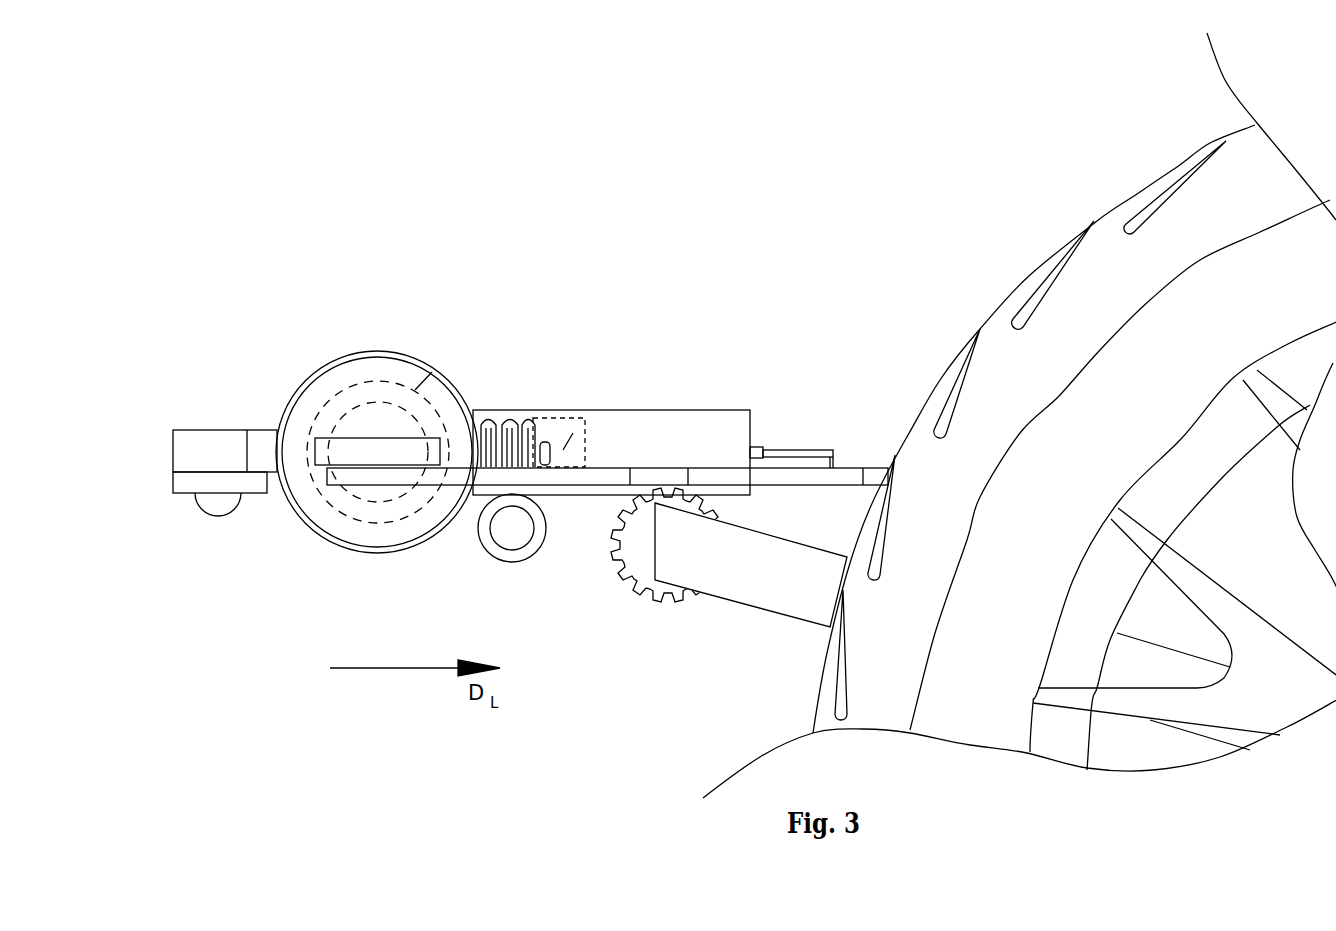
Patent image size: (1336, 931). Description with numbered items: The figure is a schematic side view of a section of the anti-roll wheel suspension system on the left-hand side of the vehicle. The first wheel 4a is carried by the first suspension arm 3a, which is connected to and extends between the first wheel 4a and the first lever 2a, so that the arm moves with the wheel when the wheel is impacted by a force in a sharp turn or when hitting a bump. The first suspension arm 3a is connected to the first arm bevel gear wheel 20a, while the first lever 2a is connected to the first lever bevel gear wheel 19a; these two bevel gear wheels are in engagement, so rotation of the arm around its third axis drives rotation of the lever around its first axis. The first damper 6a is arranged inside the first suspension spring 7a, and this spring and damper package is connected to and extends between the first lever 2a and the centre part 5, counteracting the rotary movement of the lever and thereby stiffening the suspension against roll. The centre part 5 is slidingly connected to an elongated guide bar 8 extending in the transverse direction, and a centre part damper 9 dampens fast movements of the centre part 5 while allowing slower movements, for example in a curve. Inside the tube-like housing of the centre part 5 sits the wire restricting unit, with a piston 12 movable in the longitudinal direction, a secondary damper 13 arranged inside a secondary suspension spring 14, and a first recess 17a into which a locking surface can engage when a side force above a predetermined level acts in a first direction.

The first lever 2a is at (798, 478).
The first suspension arm 3a is at (767, 570).
The first wheel 4a is at (882, 648).
The centre part 5 is at (672, 352).
The first damper 6a is at (370, 490).
The first suspension spring 7a is at (382, 530).
The elongated guide bar 8 is at (510, 530).
The centre part damper 9 is at (205, 512).
The piston 12 is at (573, 418).
The secondary damper 13 is at (522, 467).
The secondary suspension spring 14 is at (502, 427).
The first recess 17a is at (547, 455).
The first lever bevel gear wheel 19a is at (710, 487).
The first arm bevel gear wheel 20a is at (637, 590).